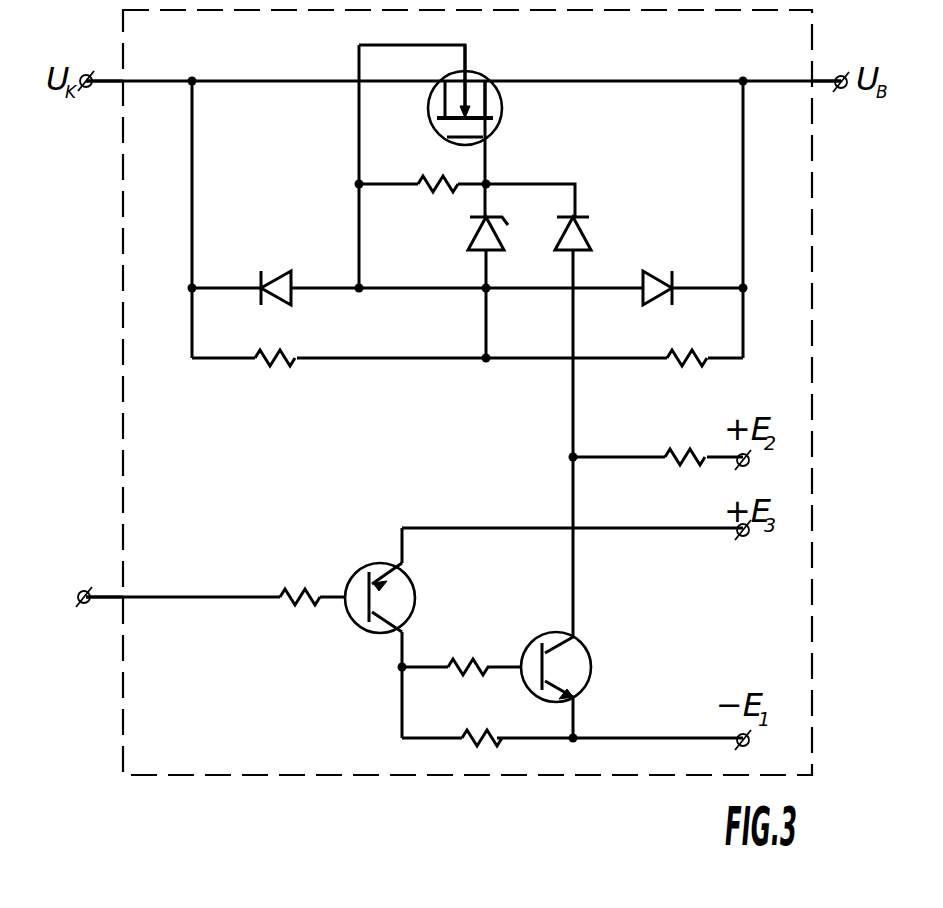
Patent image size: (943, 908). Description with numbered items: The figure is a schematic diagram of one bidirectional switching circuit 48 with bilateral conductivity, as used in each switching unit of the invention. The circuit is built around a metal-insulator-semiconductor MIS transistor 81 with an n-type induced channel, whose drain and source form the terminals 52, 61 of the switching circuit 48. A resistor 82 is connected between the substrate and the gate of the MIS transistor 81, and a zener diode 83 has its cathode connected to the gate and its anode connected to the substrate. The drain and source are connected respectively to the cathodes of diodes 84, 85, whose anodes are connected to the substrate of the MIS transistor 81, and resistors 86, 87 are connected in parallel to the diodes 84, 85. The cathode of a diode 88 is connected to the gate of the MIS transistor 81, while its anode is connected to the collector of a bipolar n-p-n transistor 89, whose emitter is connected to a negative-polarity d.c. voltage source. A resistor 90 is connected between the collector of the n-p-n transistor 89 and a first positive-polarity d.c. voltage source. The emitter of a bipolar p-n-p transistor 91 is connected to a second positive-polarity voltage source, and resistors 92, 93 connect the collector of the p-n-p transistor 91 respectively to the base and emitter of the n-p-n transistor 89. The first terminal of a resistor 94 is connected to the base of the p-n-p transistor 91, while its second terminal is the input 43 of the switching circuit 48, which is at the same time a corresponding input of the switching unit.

The switching circuit 48 is at (812, 183).
The terminal 52 is at (118, 80).
The terminal 61 is at (813, 80).
The input 43 is at (102, 595).
The MIS transistor 81 is at (472, 76).
The resistor 82 is at (440, 180).
The zener diode 83 is at (470, 233).
The diode 84 is at (277, 272).
The diode 85 is at (658, 272).
The resistor 86 is at (283, 355).
The resistor 87 is at (672, 354).
The diode 88 is at (590, 235).
The bipolar n-p-n transistor 89 is at (590, 650).
The resistor 90 is at (688, 448).
The bipolar p-n-p transistor 91 is at (406, 576).
The resistor 92 is at (486, 660).
The resistor 93 is at (468, 732).
The resistor 94 is at (300, 590).